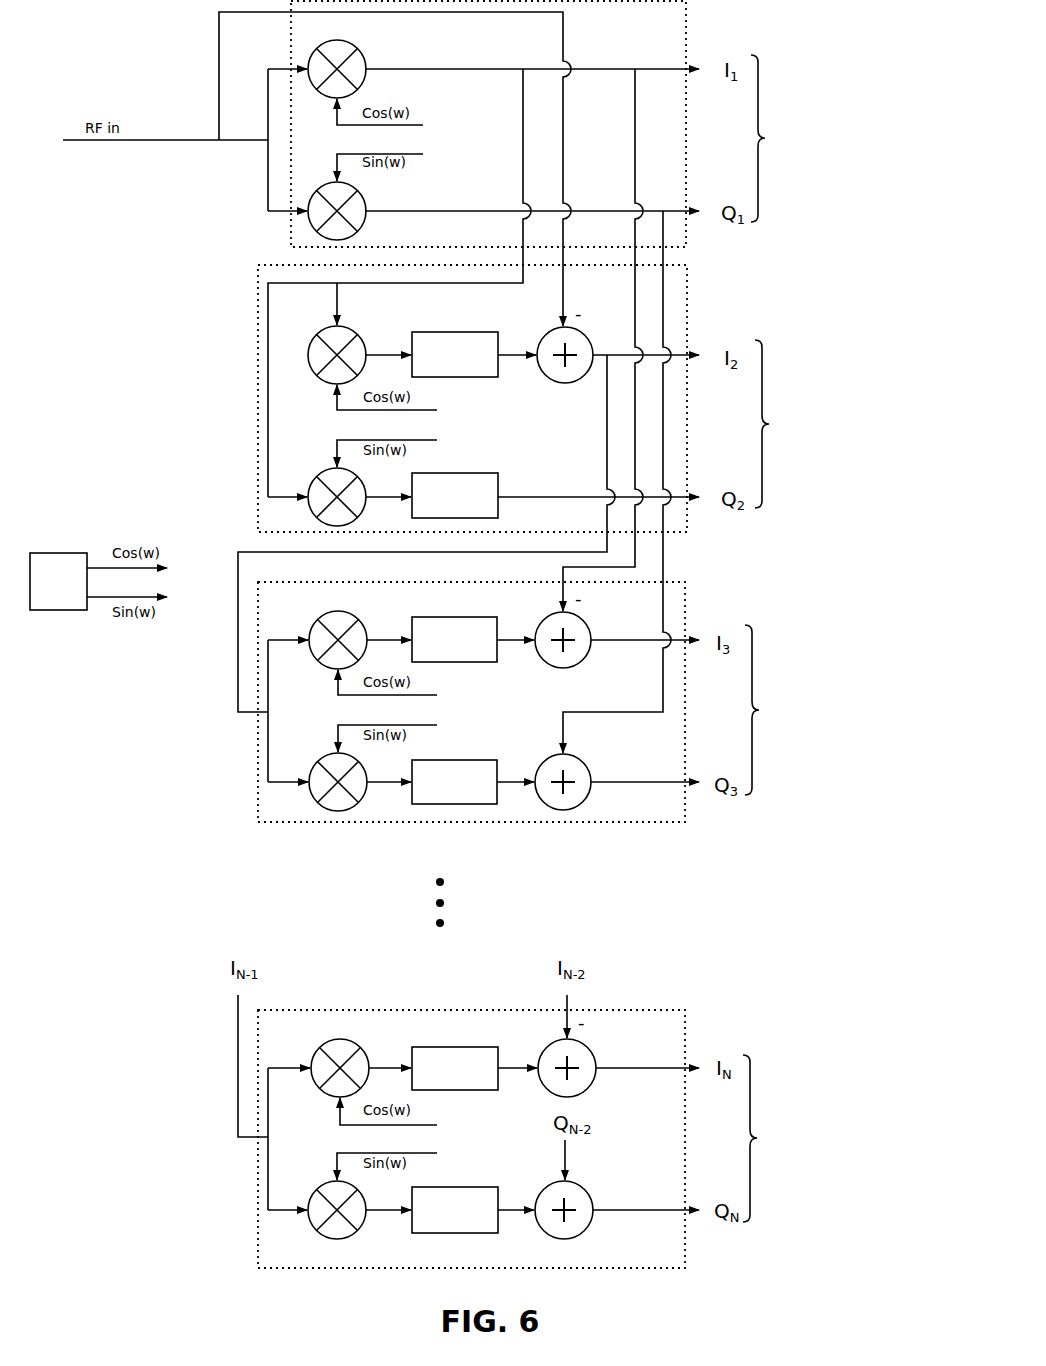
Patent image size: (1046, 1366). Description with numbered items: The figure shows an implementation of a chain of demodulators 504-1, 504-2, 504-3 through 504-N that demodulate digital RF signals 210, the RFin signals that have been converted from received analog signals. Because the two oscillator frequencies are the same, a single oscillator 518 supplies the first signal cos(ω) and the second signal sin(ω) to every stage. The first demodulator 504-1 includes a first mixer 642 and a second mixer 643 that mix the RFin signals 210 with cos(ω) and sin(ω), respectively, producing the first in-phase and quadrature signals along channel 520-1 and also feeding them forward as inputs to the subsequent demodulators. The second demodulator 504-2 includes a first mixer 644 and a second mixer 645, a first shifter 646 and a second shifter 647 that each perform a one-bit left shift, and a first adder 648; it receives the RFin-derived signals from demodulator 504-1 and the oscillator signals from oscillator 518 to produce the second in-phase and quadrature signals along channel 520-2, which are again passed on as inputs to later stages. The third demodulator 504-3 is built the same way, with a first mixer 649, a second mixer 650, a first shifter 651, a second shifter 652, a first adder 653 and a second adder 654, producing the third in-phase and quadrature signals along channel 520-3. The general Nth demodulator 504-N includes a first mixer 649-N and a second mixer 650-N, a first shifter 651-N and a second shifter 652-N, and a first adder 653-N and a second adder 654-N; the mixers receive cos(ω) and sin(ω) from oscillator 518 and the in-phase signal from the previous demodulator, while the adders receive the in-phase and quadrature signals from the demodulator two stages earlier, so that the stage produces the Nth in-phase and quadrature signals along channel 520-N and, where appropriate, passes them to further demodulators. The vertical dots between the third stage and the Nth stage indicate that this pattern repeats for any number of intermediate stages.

The digital signals 210 is at (152, 140).
The oscillator 518 is at (60, 553).
The demodulator 504-1 is at (686, 21).
The demodulator 504-2 is at (686, 277).
The demodulator 504-3 is at (686, 598).
The demodulator 504-N is at (686, 1020).
The channel 520-1 is at (789, 138).
The channel 520-2 is at (794, 424).
The channel 520-3 is at (783, 710).
The channel 520-N is at (781, 1138).
The first mixer 642 is at (358, 54).
The second mixer 643 is at (358, 197).
The first mixer 644 is at (360, 334).
The second mixer 645 is at (360, 478).
The first shifter 646 is at (455, 332).
The second shifter 647 is at (498, 485).
The first adder 648 is at (570, 383).
The first mixer 649 is at (362, 618).
The second mixer 650 is at (358, 805).
The first shifter 651 is at (455, 617).
The second shifter 652 is at (455, 760).
The first adder 653 is at (583, 665).
The second adder 654 is at (585, 806).
The first mixer 649-N is at (365, 1043).
The second mixer 650-N is at (358, 1237).
The first shifter 651-N is at (455, 1047).
The second shifter 652-N is at (455, 1187).
The first adder 653-N is at (590, 1088).
The second adder 654-N is at (590, 1191).